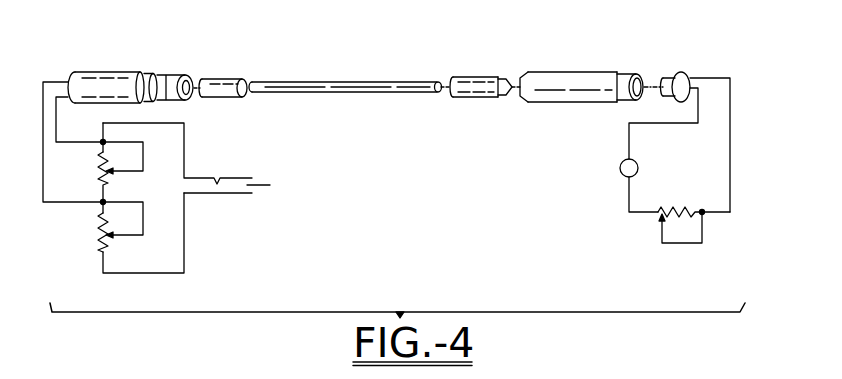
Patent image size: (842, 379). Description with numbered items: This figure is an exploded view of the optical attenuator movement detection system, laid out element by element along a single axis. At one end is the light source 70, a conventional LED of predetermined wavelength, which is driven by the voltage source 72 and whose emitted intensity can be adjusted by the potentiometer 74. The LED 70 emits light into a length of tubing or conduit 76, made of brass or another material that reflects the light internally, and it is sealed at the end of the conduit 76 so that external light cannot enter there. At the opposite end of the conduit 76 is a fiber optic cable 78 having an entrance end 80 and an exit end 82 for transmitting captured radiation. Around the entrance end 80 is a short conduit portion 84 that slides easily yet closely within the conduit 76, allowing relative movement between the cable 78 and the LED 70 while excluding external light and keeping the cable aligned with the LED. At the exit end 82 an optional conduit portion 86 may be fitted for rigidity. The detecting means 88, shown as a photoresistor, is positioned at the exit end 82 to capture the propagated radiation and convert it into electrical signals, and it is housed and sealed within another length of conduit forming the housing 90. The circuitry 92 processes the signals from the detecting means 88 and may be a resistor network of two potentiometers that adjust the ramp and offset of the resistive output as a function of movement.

The light source 70 is at (678, 72).
The voltage source 72 is at (611, 182).
The potentiometer 74 is at (673, 246).
The conduit 76 is at (597, 72).
The fiber optic cable 78 is at (325, 82).
The entrance end 80 is at (438, 82).
The exit end 82 is at (253, 82).
The conduit portion 84 is at (472, 77).
The conduit portion 86 is at (227, 78).
The detecting means 88 is at (178, 73).
The housing 90 is at (107, 70).
The circuitry 92 is at (187, 221).